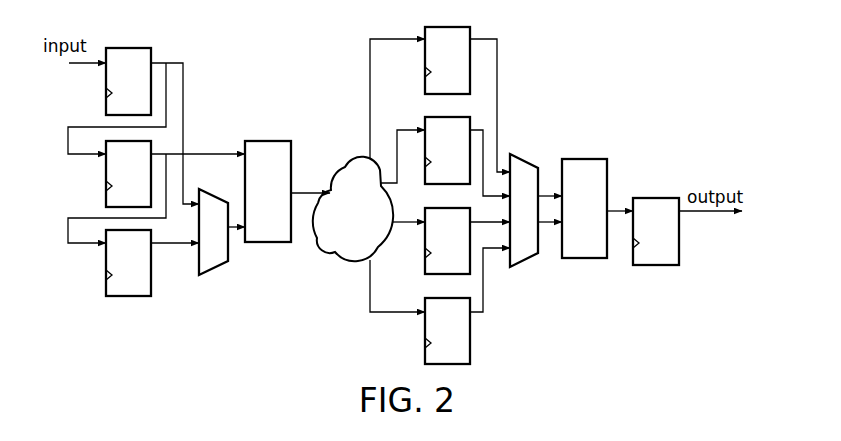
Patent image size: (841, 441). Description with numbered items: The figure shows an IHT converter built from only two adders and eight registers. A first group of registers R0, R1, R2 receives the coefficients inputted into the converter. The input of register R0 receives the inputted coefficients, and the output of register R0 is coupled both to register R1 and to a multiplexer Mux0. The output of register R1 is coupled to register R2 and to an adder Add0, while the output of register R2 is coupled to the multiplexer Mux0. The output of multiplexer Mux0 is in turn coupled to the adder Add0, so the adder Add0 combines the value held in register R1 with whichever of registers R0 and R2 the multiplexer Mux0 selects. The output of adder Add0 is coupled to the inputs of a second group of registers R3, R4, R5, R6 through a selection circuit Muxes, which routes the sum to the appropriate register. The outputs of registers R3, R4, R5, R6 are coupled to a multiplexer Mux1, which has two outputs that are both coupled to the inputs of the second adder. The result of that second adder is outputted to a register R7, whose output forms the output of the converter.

The register R0 is at (128, 81).
The register R1 is at (128, 174).
The register R2 is at (128, 263).
The register R3 is at (447, 60).
The register R4 is at (447, 150).
The register R5 is at (447, 241).
The register R6 is at (447, 331).
The register R7 is at (656, 231).
The adder Add0 is at (426, 199).
The multiplexer Mux0 is at (213, 232).
The multiplexer Mux1 is at (524, 210).
The selection circuit Muxes is at (353, 209).